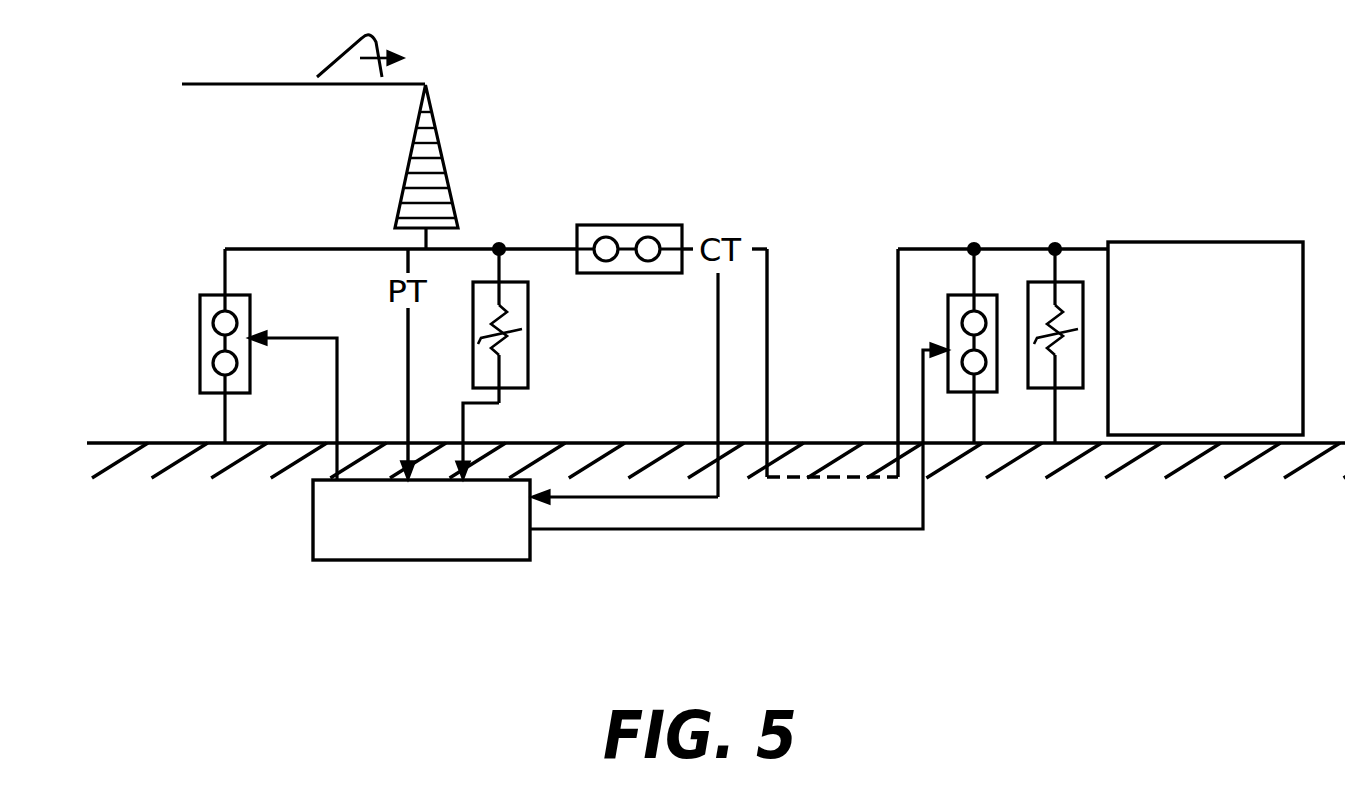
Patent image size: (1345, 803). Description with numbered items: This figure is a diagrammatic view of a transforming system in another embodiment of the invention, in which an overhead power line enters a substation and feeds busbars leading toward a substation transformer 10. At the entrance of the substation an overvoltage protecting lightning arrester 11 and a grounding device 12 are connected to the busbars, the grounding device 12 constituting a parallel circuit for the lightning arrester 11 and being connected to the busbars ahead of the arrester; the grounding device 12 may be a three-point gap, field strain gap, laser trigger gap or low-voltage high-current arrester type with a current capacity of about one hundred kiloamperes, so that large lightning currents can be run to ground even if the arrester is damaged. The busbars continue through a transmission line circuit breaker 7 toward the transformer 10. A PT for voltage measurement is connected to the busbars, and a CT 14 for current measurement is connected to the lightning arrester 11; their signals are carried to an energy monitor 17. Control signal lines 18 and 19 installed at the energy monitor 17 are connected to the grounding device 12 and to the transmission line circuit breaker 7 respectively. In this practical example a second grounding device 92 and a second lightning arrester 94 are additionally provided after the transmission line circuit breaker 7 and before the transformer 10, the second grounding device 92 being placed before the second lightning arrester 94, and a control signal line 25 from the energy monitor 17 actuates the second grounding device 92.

The transmission line circuit breaker 7 is at (637, 225).
The substation transformer 10 is at (1208, 242).
The lightning arrester 11 is at (528, 355).
The grounding device 12 is at (200, 365).
The CT for current measurement 14 is at (547, 445).
The energy monitor 17 is at (453, 562).
The control signal line 18 is at (338, 397).
The control signal line 19 is at (630, 510).
The control signal line 25 is at (860, 532).
The second grounding device 92 is at (960, 295).
The second lightning arrester 94 is at (1035, 282).